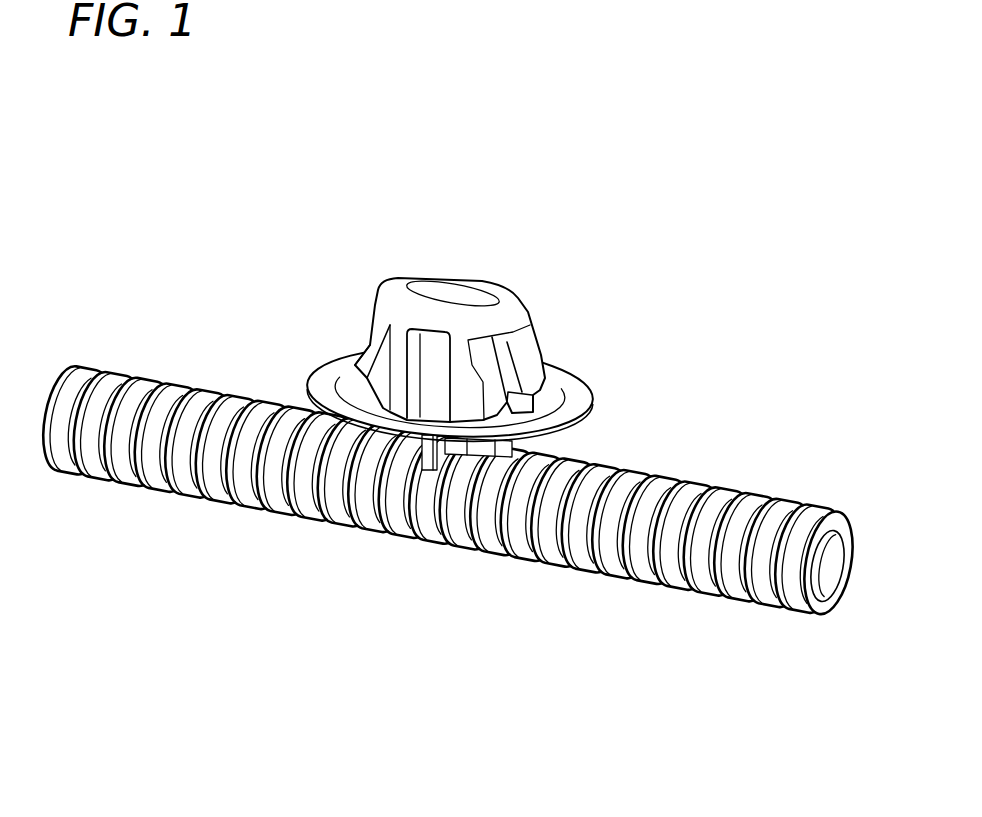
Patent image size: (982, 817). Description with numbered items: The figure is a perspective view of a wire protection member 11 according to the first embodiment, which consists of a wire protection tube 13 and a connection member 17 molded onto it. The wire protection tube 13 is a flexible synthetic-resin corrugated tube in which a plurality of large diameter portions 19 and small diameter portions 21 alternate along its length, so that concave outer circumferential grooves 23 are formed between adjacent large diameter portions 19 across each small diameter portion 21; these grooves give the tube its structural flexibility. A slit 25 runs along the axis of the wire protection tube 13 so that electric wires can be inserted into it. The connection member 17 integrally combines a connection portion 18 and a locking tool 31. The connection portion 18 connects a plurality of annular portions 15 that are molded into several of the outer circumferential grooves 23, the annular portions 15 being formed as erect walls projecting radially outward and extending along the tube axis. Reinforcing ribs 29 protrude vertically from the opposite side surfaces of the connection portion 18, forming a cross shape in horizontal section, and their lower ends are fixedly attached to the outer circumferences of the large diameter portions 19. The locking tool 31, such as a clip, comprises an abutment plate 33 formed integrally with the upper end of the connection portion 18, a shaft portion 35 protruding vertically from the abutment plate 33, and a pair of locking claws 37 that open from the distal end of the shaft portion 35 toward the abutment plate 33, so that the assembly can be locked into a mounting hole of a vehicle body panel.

The wire protection member 11 is at (458, 308).
The wire protection tube 13 is at (451, 543).
The annular portions 15 is at (472, 538).
The connection member 17 is at (458, 318).
The connection portion 18 is at (530, 446).
The large diameter portions 19 is at (515, 543).
The small diameter portions 21 is at (595, 523).
The outer circumferential grooves 23 is at (654, 578).
The slit 25 is at (820, 612).
The reinforcing ribs 29 is at (420, 453).
The locking tool 31 is at (467, 300).
The abutment plate 33 is at (582, 393).
The shaft portion 35 is at (438, 356).
The locking claws 37 is at (373, 345).